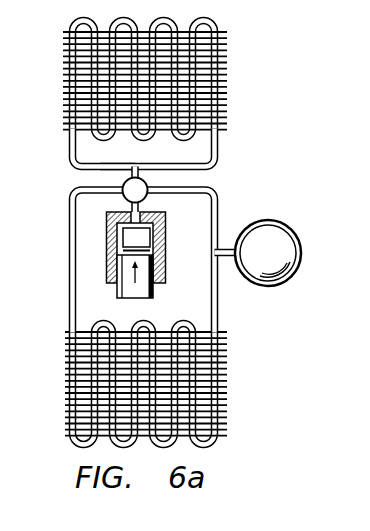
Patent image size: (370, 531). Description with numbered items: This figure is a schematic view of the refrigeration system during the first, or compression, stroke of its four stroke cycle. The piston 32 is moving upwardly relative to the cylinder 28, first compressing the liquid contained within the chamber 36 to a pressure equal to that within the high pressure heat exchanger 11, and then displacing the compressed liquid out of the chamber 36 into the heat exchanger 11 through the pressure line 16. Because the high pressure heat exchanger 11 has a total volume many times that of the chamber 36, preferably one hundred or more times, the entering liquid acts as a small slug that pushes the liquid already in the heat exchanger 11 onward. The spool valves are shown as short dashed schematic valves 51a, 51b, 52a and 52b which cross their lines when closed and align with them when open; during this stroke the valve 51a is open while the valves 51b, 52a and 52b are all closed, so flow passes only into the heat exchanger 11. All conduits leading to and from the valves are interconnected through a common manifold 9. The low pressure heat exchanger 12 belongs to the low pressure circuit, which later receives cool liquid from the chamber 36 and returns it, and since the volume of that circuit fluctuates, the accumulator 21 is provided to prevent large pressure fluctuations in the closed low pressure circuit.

The high pressure heat exchanger 11 is at (223, 93).
The low pressure heat exchanger 12 is at (223, 380).
The pressure line 16 is at (70, 157).
The schematic valve 51a is at (120, 164).
The schematic valve 51b is at (152, 172).
The schematic valve 52a is at (160, 191).
The schematic valve 52b is at (112, 190).
The common manifold 9 is at (147, 197).
The accumulator 21 is at (263, 288).
The cylinder 28 is at (166, 238).
The piston 32 is at (156, 291).
The chamber 36 is at (136, 239).